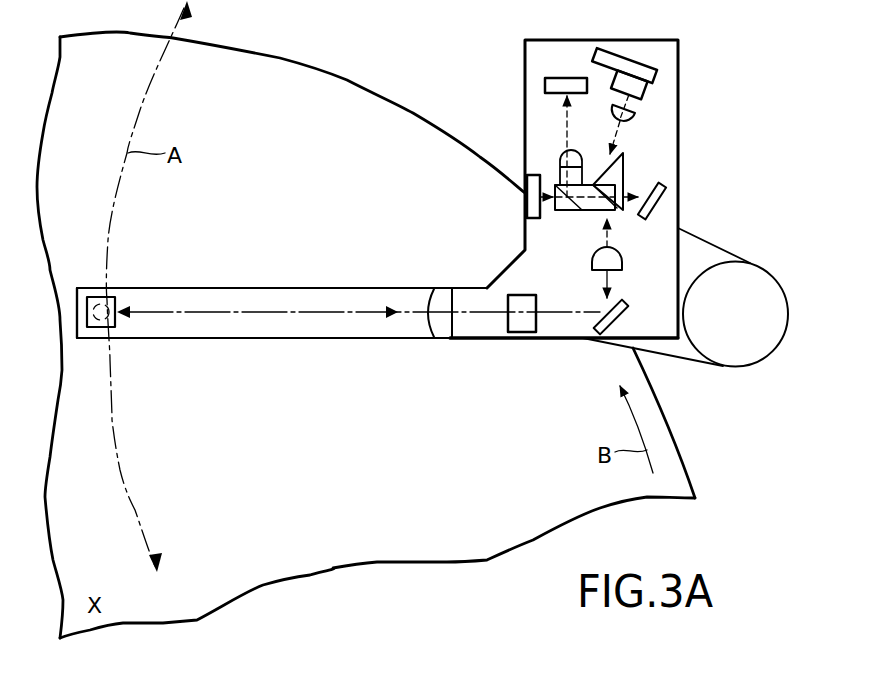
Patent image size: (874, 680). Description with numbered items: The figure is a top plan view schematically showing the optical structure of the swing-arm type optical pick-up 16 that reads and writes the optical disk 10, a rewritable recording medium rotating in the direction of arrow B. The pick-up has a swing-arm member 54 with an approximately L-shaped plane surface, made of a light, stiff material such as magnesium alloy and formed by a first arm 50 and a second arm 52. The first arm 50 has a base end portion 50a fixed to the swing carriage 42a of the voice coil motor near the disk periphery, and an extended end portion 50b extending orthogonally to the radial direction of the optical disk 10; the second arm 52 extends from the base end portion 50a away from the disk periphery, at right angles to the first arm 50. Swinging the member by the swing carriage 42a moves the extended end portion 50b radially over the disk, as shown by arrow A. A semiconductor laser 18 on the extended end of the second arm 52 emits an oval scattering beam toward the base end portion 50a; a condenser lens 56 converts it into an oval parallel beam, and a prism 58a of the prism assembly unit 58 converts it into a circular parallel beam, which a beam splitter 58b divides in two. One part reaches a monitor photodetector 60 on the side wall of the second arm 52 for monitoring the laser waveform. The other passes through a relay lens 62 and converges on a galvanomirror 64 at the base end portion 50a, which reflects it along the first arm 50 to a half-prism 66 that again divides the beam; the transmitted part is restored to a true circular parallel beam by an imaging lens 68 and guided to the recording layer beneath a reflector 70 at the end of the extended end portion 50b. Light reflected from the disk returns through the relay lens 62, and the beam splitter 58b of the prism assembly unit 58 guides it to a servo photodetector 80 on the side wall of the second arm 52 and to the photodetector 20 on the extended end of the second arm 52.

The optical disk 10 is at (321, 70).
The swing-arm type optical pick-up 16 is at (404, 239).
The semiconductor laser 18 is at (648, 90).
The photodetector 20 is at (545, 85).
The swing carriage 42a is at (683, 348).
The first arm 50 is at (313, 337).
The base end portion 50a is at (576, 339).
The extended end portion 50b is at (163, 329).
The second arm 52 is at (667, 150).
The swing-arm member 54 is at (473, 347).
The condenser lens 56 is at (636, 115).
The prism assembly unit 58 is at (566, 219).
The prism 58a is at (624, 172).
The beam splitter 58b is at (621, 214).
The monitor photodetector 60 is at (663, 202).
The relay lens 62 is at (625, 263).
The galvanomirror 64 is at (624, 318).
The half-prism 66 is at (522, 336).
The imaging lens 68 is at (438, 321).
The reflector 70 is at (117, 302).
The servo photodetector 80 is at (527, 184).